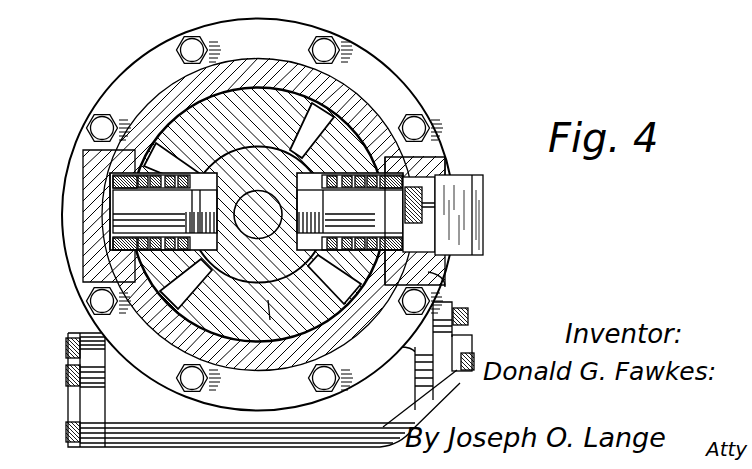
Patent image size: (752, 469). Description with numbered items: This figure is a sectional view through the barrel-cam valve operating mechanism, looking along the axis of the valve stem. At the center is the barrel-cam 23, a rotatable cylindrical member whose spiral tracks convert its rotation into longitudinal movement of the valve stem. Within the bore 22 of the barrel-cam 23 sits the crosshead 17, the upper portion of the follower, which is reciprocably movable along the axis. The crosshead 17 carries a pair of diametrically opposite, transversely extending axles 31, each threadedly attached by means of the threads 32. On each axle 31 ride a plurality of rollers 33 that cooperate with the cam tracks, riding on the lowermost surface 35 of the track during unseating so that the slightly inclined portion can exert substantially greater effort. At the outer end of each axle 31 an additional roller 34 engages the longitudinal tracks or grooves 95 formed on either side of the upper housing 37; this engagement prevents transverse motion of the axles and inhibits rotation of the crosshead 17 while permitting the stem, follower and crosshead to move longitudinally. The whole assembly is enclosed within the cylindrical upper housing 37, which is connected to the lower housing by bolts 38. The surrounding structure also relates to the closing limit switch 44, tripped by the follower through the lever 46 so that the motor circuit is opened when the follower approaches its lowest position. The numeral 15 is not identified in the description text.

The rotor hub 15 is at (262, 140).
The crosshead 17 is at (252, 190).
The bore 22 is at (182, 333).
The barrel-cam 23 is at (270, 320).
The axle 31 is at (118, 210).
The threads 32 is at (200, 198).
The roller 33 is at (365, 105).
The roller 34 is at (112, 182).
The lowermost surface of the cam track 35 is at (157, 153).
The upper housing 37 is at (168, 88).
The bolt 38 is at (330, 38).
The closing limit switch 44 is at (483, 208).
The lever 46 is at (433, 187).
The longitudinal tracks 95 is at (127, 175).